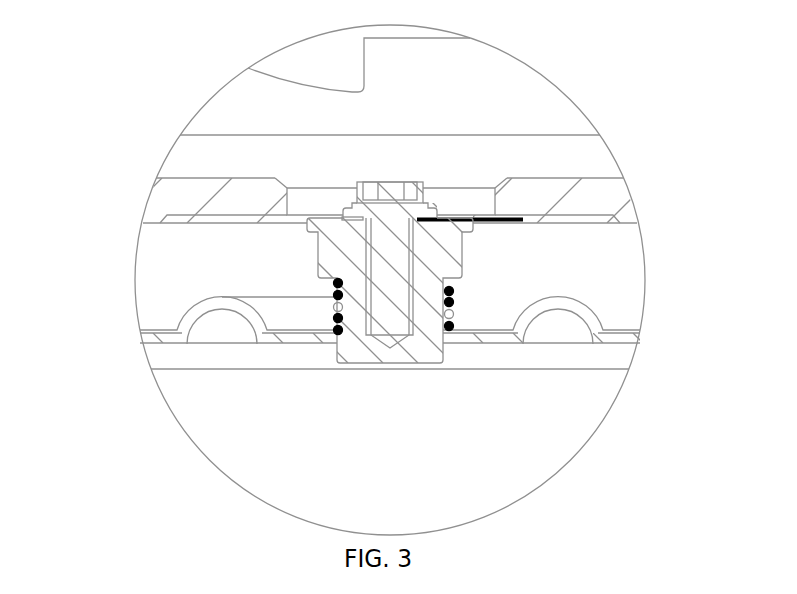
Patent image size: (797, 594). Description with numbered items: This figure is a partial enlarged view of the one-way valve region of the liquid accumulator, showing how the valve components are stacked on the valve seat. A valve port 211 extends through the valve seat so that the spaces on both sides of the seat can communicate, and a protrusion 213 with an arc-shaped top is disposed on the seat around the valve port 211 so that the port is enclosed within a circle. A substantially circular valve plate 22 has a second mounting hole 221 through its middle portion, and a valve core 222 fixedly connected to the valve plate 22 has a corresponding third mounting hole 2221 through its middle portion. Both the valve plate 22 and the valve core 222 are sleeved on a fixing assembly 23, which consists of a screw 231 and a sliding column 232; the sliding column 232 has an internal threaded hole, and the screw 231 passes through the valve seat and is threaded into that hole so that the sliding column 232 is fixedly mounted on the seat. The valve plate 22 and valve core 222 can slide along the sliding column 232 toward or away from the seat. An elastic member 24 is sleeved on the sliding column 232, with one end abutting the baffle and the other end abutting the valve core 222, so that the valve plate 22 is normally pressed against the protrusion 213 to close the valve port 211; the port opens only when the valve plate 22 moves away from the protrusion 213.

The valve plate 22 is at (278, 217).
The valve port 211 is at (478, 185).
The protrusion 213 is at (497, 212).
The valve core 222 is at (327, 248).
The second mounting hole 221 is at (433, 228).
The third mounting hole 2221 is at (435, 270).
The fixing assembly 23 is at (323, 384).
The screw 231 is at (318, 297).
The sliding column 232 is at (352, 348).
The elastic member 24 is at (455, 338).